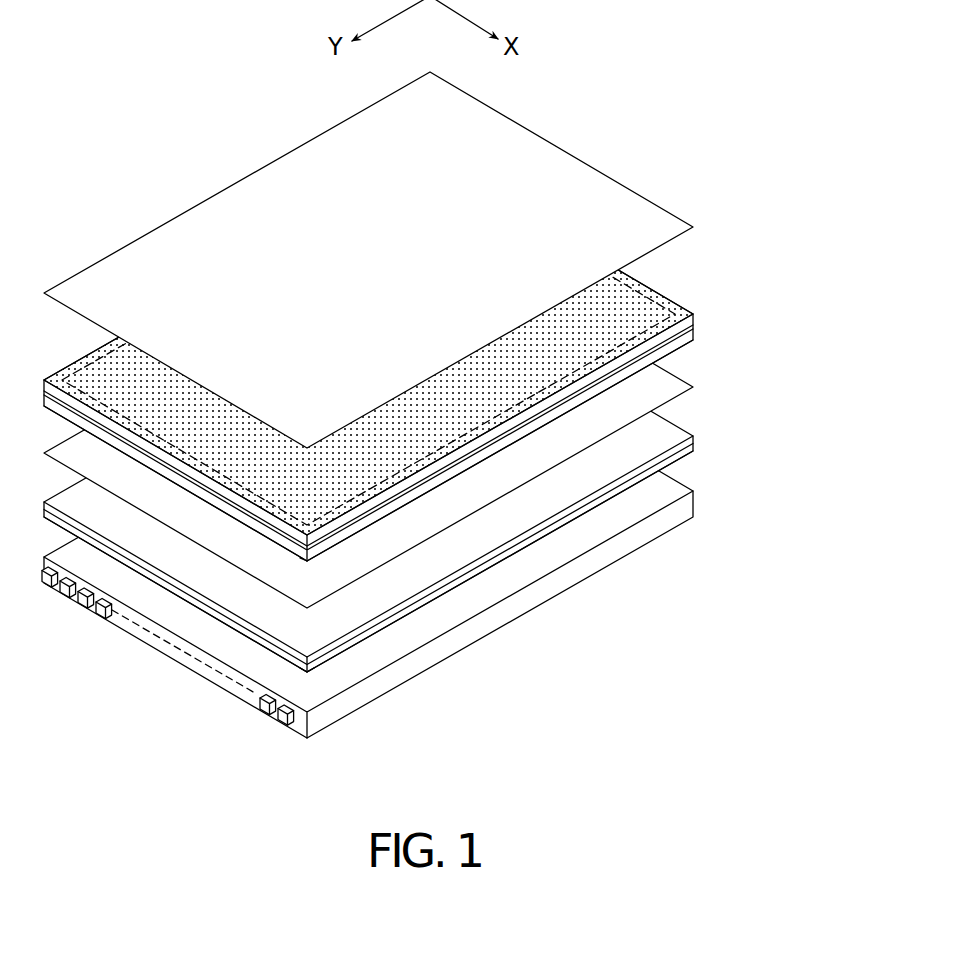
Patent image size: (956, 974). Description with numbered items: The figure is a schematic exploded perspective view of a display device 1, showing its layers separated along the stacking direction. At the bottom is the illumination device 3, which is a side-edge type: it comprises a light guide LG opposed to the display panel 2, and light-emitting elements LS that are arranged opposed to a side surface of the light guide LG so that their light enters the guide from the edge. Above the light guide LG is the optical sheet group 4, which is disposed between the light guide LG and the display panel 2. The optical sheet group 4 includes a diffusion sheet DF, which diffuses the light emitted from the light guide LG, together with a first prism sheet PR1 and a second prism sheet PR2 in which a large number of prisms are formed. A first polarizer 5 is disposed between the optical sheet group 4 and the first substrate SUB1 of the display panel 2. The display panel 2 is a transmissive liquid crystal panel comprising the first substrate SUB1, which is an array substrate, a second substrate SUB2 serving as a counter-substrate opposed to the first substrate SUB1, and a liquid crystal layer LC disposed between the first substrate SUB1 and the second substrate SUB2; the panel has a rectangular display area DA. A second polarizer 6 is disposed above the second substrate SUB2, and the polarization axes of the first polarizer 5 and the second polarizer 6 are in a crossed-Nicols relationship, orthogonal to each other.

The display device 1 is at (126, 214).
The display panel 2 is at (439, 360).
The illumination device 3 is at (367, 551).
The optical sheet group 4 is at (432, 476).
The first polarizer 5 is at (688, 383).
The second polarizer 6 is at (665, 209).
The display area DA is at (642, 291).
The second substrate SUB2 is at (685, 308).
The liquid crystal layer LC is at (695, 327).
The first substrate SUB1 is at (687, 343).
The second prism sheet PR2 is at (690, 438).
The first prism sheet PR1 is at (694, 445).
The diffusion sheet DF is at (533, 562).
The light guide LG is at (380, 685).
The light-emitting elements LS is at (261, 717).